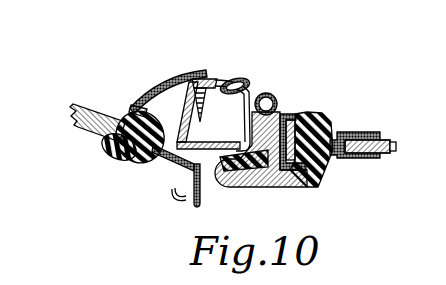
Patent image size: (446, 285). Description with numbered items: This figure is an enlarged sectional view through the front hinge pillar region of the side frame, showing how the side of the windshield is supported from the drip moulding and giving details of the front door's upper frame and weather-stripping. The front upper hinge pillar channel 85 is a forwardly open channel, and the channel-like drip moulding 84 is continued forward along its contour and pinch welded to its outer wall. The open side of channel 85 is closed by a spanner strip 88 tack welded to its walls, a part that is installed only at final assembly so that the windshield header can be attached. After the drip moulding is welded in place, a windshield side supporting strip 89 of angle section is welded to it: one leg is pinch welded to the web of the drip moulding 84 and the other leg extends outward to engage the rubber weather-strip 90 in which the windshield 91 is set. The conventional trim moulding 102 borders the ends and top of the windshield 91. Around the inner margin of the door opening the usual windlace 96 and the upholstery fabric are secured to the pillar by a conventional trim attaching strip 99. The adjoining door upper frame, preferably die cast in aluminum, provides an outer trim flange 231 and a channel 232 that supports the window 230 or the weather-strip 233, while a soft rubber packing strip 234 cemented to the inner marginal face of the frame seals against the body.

The drip moulding 84 is at (173, 199).
The front upper hinge pillar channel 85 is at (202, 141).
The spanner strip 88 is at (178, 112).
The windshield side supporting strip 89 is at (170, 161).
The rubber weather-strip 90 is at (122, 163).
The windshield 91 is at (90, 135).
The windlace 96 is at (274, 94).
The trim attaching strip 99 is at (238, 80).
The trim moulding 102 is at (185, 78).
The window 230 is at (386, 160).
The outer trim flange 231 is at (283, 187).
The channel 232 is at (290, 114).
The weather-strip 233 is at (337, 131).
The packing strip 234 is at (237, 187).